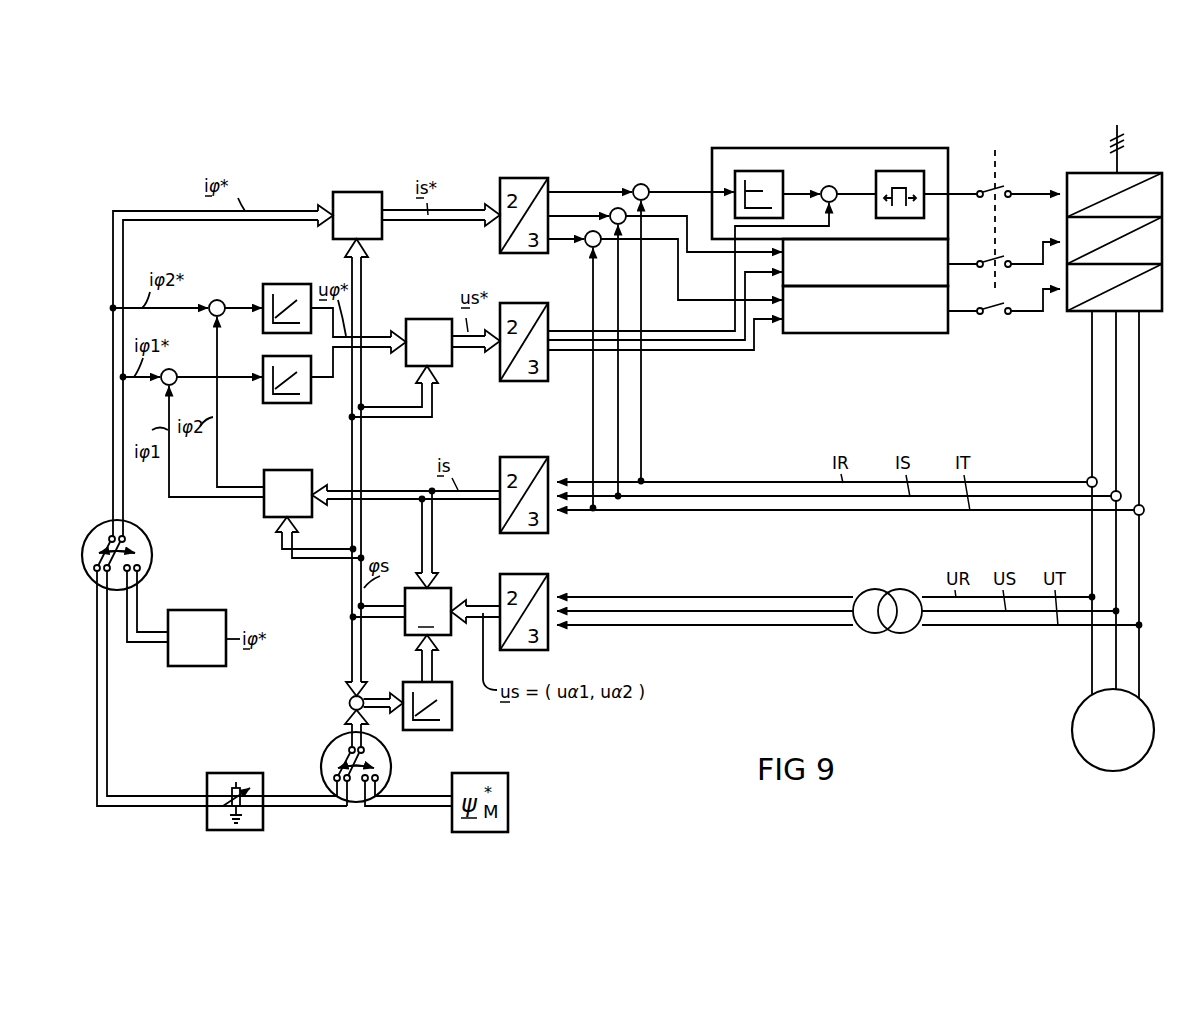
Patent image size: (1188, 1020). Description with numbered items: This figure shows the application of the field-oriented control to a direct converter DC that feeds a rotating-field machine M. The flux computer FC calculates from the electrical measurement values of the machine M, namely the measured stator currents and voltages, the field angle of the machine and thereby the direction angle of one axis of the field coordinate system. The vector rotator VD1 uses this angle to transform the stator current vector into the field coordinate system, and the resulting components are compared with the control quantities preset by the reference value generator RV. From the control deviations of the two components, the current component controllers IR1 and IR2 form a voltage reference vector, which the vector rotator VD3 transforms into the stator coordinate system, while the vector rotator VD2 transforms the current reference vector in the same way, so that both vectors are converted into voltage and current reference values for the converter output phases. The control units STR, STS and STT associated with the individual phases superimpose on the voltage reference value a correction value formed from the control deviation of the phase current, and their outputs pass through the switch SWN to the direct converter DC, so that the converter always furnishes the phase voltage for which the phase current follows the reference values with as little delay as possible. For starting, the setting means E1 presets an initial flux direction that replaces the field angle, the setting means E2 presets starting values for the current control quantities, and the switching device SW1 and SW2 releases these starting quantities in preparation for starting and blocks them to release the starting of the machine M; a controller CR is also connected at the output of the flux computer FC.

The vector rotator VD1 is at (288, 493).
The vector rotator VD2 is at (357, 215).
The vector rotator VD3 is at (429, 342).
The current component controller IR1 is at (285, 403).
The current component controller IR2 is at (285, 283).
The control unit STR is at (712, 163).
The control unit STS is at (865, 262).
The control unit STT is at (865, 309).
The switch SWN is at (1004, 220).
The direct converter DC is at (1135, 172).
The switching device SW1 is at (328, 748).
The switching device SW2 is at (152, 553).
The reference value generator RV is at (197, 638).
The controller CR is at (427, 730).
The flux computer FC is at (451, 588).
The setting means E1 is at (193, 807).
The setting means E2 is at (207, 825).
The rotating-field machine M is at (1113, 730).